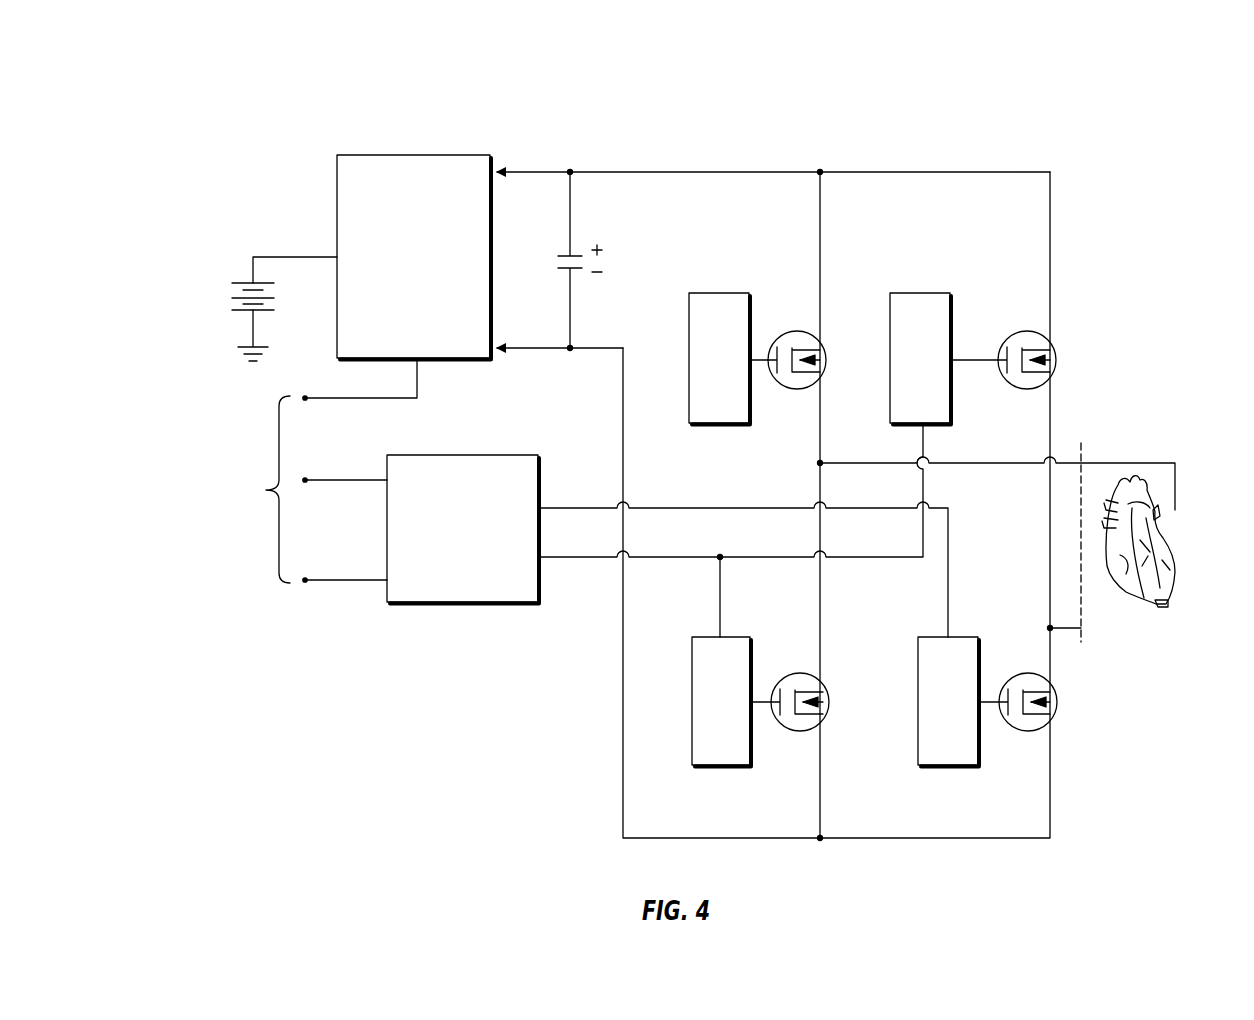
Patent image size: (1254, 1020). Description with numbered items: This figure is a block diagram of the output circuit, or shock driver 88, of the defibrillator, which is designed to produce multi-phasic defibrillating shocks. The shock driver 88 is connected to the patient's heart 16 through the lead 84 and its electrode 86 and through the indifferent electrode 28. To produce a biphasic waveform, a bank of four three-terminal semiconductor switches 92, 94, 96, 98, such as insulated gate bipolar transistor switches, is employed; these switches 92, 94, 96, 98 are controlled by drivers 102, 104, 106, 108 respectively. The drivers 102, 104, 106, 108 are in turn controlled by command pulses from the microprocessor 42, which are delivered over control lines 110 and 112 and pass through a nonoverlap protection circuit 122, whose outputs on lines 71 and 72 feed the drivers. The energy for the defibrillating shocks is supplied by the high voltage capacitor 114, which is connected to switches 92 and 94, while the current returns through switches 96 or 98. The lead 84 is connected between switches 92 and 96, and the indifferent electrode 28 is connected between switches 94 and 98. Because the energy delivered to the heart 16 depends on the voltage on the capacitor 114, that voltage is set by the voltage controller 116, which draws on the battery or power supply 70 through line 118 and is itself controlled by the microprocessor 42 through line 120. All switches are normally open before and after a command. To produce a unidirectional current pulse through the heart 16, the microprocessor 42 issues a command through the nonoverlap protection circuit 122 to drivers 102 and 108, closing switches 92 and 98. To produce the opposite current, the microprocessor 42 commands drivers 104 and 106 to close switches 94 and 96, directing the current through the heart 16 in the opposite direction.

The shock driver 88 is at (516, 134).
The voltage controller 116 is at (412, 154).
The line 118 is at (292, 255).
The battery or power supply 70 is at (246, 282).
The high voltage capacitor 114 is at (556, 266).
The line 120 is at (418, 380).
The microprocessor 42 is at (192, 470).
The control line 110 is at (344, 478).
The control line 112 is at (356, 582).
The nonoverlap protection circuit 122 is at (466, 605).
The first control line 71 is at (660, 508).
The second control line 72 is at (660, 557).
The driver 102 is at (752, 322).
The three-terminal semiconductor switch 92 is at (828, 348).
The driver 104 is at (920, 292).
The three-terminal semiconductor switch 94 is at (1058, 358).
The driver 106 is at (726, 768).
The three-terminal semiconductor switch 96 is at (830, 712).
The driver 108 is at (954, 768).
The three-terminal semiconductor switch 98 is at (1060, 712).
The lead 84 is at (1116, 463).
The indifferent electrode 28 is at (1084, 638).
The electrode 86 is at (1156, 526).
The heart 16 is at (1178, 590).